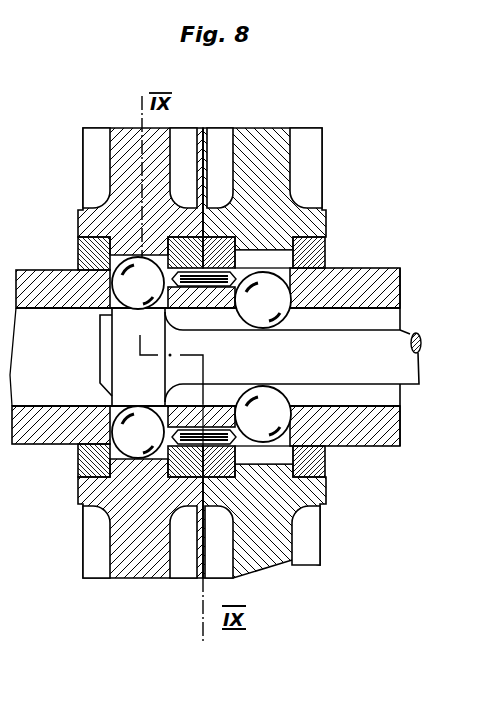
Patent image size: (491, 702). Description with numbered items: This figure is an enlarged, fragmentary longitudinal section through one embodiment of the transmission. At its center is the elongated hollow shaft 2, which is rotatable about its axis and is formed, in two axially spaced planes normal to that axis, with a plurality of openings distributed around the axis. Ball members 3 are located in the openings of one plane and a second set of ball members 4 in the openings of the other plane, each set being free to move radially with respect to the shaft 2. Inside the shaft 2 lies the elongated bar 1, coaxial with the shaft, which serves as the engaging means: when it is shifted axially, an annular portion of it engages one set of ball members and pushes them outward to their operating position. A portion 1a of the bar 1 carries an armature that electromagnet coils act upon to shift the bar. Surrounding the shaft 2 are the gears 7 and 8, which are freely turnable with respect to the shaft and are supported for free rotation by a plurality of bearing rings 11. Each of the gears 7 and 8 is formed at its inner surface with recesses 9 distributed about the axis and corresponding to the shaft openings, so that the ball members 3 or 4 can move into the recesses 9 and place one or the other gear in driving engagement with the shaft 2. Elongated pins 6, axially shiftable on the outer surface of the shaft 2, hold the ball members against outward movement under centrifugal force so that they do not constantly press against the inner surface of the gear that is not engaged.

The elongated bar 1 is at (424, 340).
The portion of the bar 1a is at (125, 364).
The elongated hollow shaft 2 is at (400, 282).
The ball members 3 is at (333, 265).
The ball members 4 is at (77, 254).
The elongated pins 6 is at (213, 237).
The gear 7 is at (110, 215).
The gear 8 is at (282, 172).
The recesses 9 is at (264, 262).
The bearing rings 11 is at (400, 204).